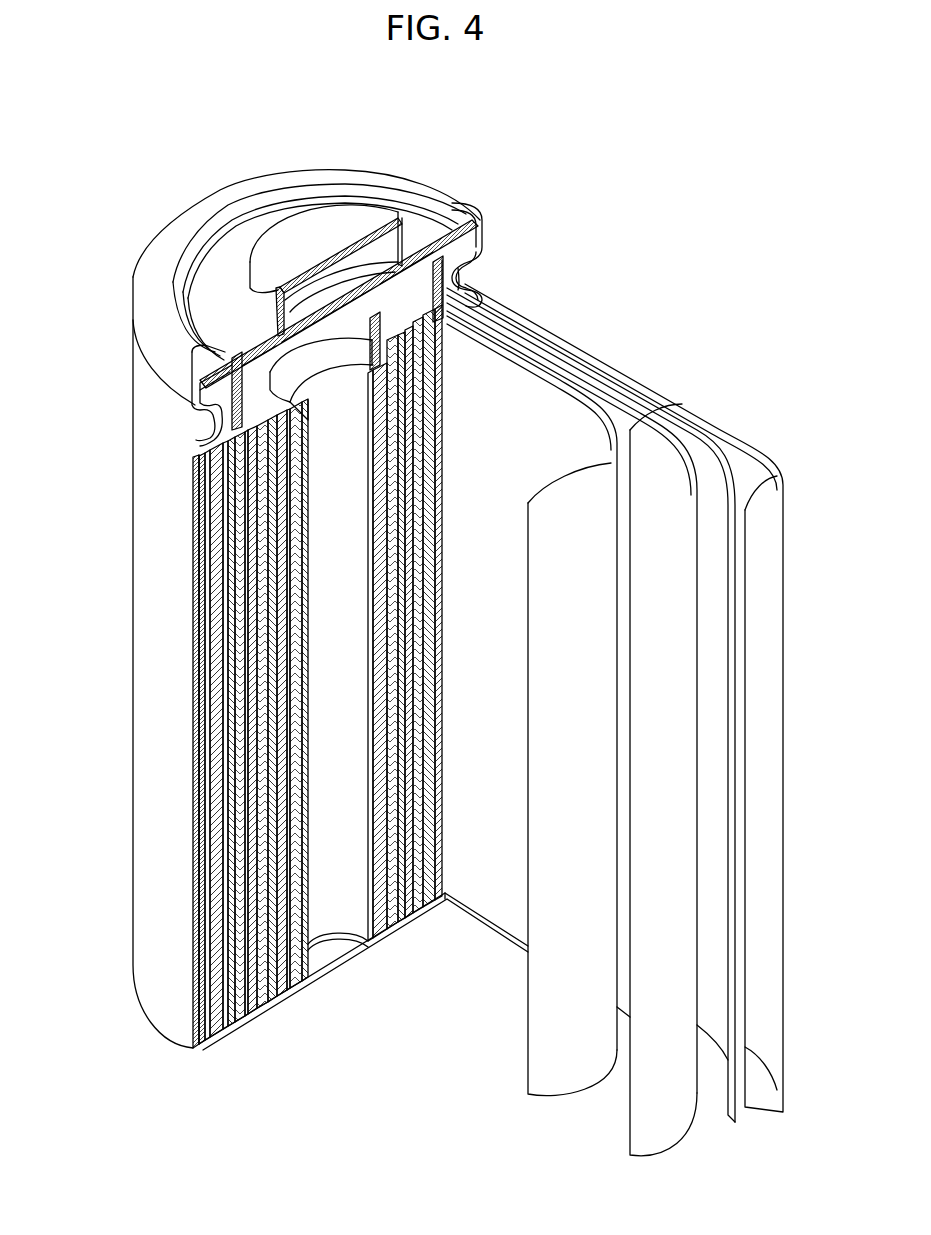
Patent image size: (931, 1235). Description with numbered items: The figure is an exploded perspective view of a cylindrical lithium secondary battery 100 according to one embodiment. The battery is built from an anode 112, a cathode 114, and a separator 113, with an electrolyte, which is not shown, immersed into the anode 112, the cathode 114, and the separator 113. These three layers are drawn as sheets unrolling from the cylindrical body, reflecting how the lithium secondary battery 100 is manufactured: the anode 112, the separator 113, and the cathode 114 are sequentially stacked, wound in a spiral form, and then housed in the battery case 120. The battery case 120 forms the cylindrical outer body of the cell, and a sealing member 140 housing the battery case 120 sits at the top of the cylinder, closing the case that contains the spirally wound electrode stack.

The lithium secondary battery 100 is at (480, 158).
The anode 112 is at (748, 462).
The separator 113 is at (502, 368).
The cathode 114 is at (631, 430).
The battery case 120 is at (145, 656).
The sealing member 140 is at (291, 218).